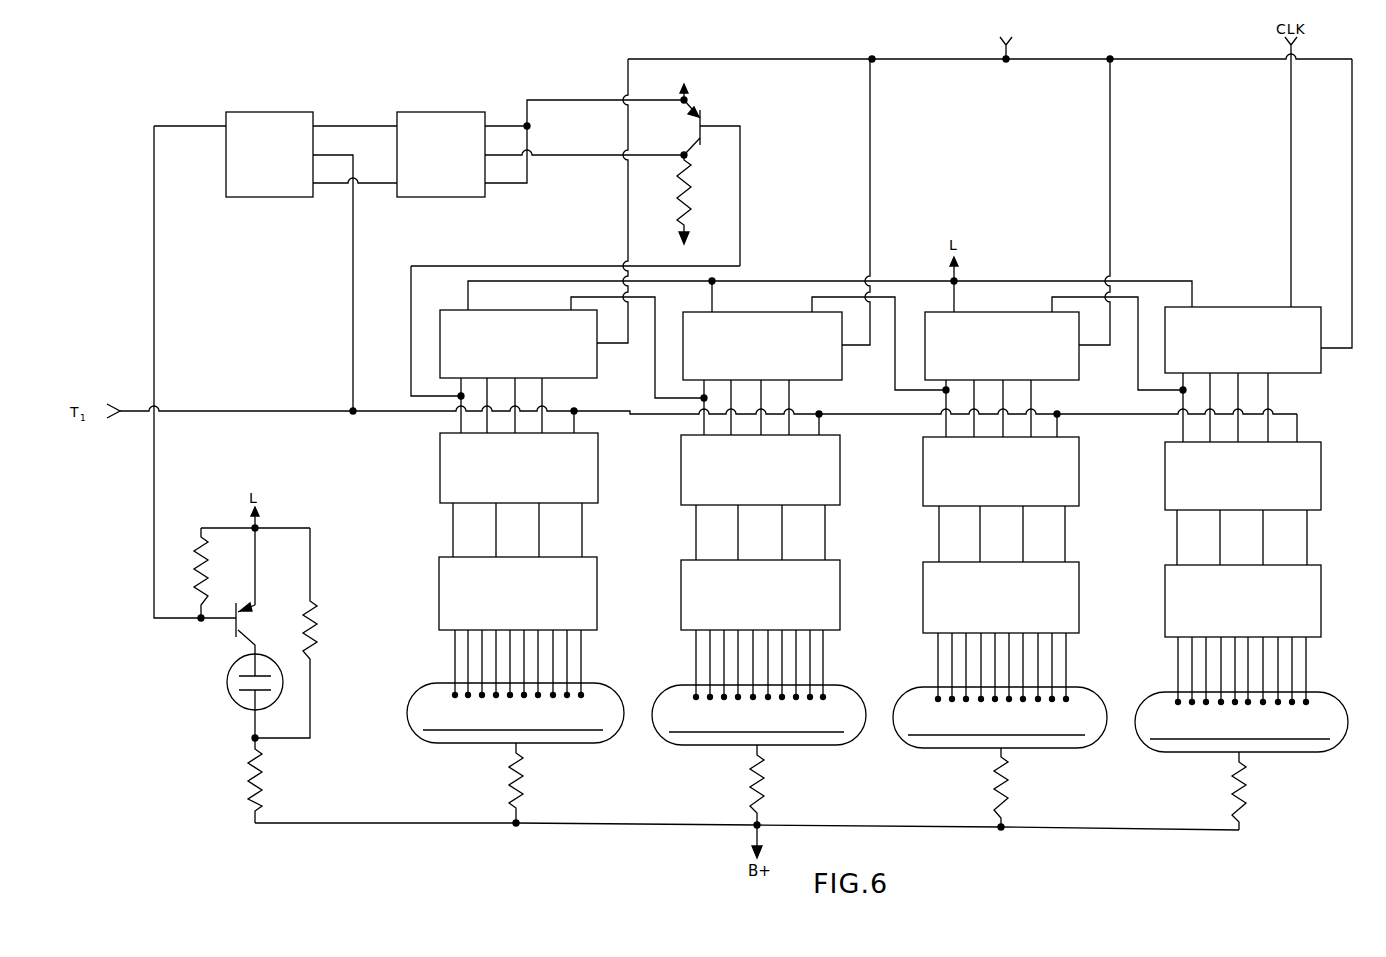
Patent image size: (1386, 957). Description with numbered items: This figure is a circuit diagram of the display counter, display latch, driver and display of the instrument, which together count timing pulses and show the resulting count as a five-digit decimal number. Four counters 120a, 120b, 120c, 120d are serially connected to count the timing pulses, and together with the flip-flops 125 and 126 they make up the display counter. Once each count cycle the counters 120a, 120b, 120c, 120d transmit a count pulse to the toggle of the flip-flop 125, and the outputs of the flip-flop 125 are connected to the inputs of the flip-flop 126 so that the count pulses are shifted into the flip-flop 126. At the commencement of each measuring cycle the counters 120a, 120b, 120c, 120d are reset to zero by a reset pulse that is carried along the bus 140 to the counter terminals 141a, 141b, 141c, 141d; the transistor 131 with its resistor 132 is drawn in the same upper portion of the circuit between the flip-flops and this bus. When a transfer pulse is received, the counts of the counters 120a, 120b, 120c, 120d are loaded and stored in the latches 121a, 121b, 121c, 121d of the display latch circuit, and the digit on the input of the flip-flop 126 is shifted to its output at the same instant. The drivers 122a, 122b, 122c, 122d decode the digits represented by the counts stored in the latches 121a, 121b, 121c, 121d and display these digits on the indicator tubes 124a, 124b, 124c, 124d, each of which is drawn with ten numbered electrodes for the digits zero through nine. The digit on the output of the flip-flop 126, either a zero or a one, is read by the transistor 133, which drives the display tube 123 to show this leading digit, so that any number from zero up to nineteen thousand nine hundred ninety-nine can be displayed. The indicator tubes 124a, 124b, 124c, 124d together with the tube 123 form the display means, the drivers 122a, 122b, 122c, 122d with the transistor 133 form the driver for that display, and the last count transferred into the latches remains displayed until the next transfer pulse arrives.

The flip-flop 126 is at (273, 122).
The flip-flop 125 is at (447, 122).
The transistor 131 is at (712, 118).
The resistor 132 is at (690, 192).
The output terminal line To 140 is at (1008, 48).
The counter terminal 141d is at (625, 216).
The counter terminal 141c is at (869, 216).
The counter terminal 141b is at (1107, 216).
The counter terminal 141a is at (1352, 218).
The counter 120d is at (577, 376).
The counter 120c is at (822, 376).
The counter 120b is at (1062, 376).
The counter 120a is at (1298, 370).
The latch 121d is at (588, 497).
The latch 121c is at (830, 499).
The latch 121b is at (1070, 500).
The latch 121a is at (1312, 505).
The driver 122d is at (583, 624).
The driver 122c is at (828, 626).
The driver 122b is at (1070, 628).
The driver 122a is at (1310, 630).
The indicator tube 124d is at (605, 722).
The indicator tube 124c is at (850, 722).
The indicator tube 124b is at (1092, 725).
The indicator tube 124a is at (1333, 729).
The transistor 133 is at (251, 619).
The display tube 123 is at (233, 706).